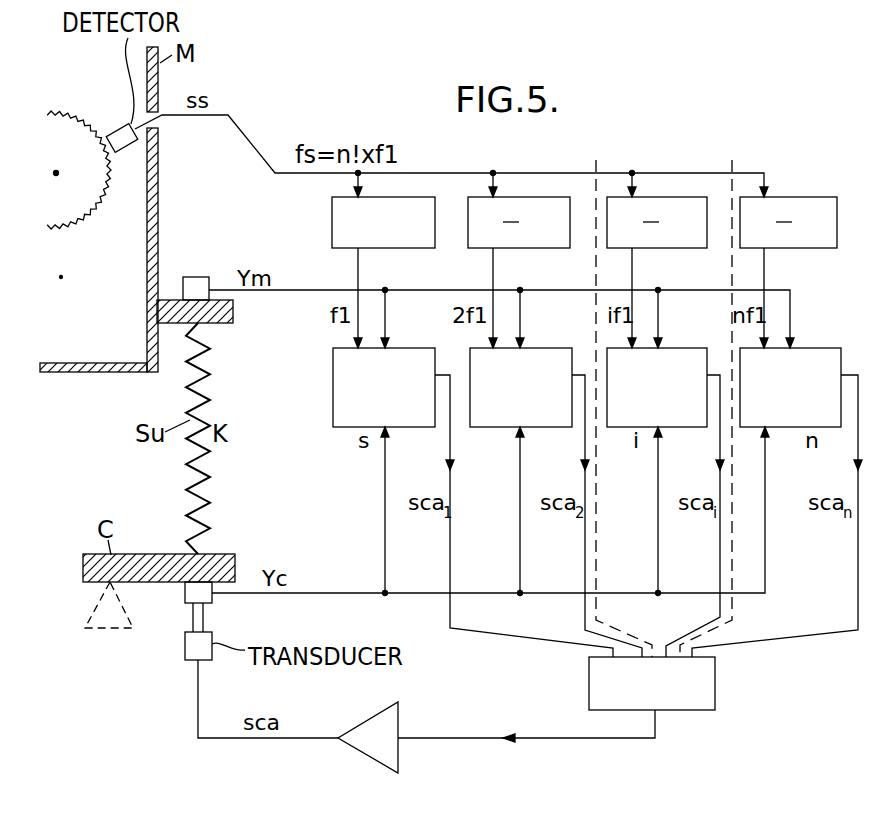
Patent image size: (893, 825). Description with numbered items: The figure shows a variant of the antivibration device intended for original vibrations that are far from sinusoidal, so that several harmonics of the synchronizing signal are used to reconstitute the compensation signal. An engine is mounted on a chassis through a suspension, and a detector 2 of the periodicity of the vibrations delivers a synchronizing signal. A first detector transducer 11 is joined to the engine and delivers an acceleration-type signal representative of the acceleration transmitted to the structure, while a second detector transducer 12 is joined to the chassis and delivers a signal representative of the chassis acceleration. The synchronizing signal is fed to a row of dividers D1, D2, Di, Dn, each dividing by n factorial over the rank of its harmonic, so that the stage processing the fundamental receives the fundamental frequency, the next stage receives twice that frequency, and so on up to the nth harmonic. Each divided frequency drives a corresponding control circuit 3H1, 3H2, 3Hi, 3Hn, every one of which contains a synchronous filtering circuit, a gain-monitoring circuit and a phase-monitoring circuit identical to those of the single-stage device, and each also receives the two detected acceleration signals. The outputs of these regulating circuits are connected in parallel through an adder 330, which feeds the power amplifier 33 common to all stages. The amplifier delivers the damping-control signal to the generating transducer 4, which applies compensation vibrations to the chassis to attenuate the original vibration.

The detector 2 is at (123, 135).
The first detector transducer 11 is at (196, 292).
The second detector transducer 12 is at (200, 596).
The transducer 4 is at (190, 652).
The power amplifier 33 is at (380, 722).
The adder 330 is at (707, 690).
The divider D1 is at (340, 249).
The divider D2 is at (480, 250).
The divider Di is at (667, 250).
The divider Dn is at (820, 250).
The control circuit 3H1 is at (432, 333).
The control circuit 3H2 is at (569, 333).
The control circuit 3Hi is at (702, 333).
The control circuit 3Hn is at (823, 347).